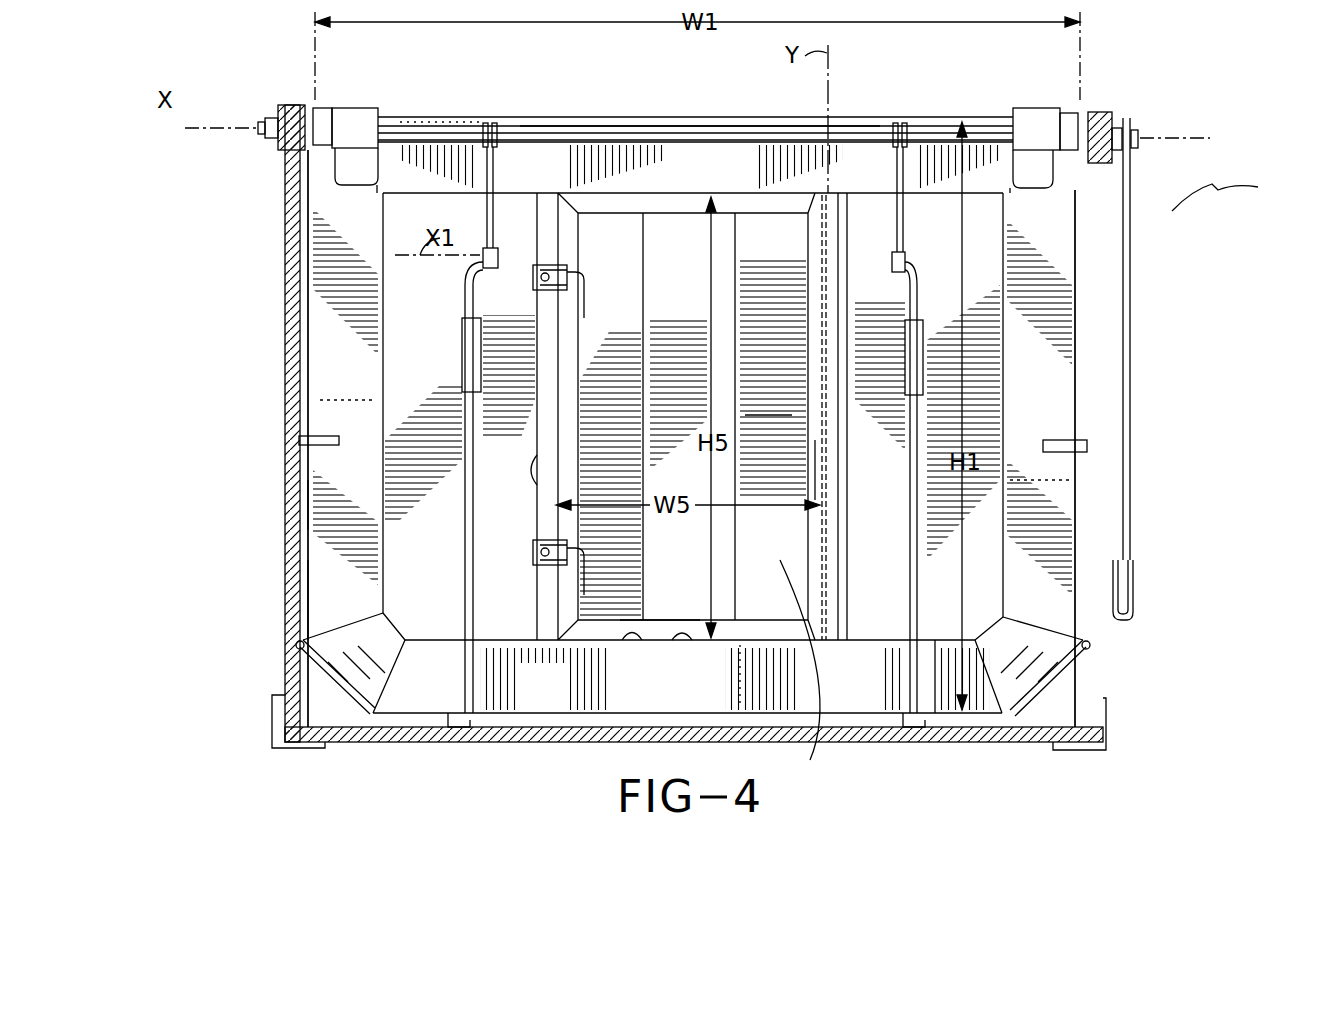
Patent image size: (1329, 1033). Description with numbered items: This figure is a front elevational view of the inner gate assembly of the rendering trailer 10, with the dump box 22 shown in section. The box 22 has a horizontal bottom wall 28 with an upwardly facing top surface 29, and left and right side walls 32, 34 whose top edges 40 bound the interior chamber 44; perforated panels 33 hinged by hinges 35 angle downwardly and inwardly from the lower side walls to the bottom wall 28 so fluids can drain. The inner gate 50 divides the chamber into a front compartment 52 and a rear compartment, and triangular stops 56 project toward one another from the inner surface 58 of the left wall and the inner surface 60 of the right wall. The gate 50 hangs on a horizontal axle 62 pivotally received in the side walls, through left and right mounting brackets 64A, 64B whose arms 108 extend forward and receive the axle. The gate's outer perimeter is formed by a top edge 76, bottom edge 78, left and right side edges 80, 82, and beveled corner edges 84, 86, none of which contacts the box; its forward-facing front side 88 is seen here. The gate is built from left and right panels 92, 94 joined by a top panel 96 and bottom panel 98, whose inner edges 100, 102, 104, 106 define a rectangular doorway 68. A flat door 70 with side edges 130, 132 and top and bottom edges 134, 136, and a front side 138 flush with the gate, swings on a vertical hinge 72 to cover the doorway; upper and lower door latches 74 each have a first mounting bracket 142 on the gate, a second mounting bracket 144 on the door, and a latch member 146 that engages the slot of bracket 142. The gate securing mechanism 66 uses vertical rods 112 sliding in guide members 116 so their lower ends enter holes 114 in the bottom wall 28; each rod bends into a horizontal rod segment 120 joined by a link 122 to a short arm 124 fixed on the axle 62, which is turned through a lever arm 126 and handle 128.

The rendering trailer 10 is at (1229, 197).
The dump box 22 is at (278, 273).
The bottom wall 28 is at (512, 745).
The top surface 29 is at (768, 722).
The left side wall 32 is at (1110, 642).
The perforated panels 33 is at (330, 712).
The right side wall 34 is at (278, 215).
The hinges 35 is at (345, 630).
The top edge 40 is at (290, 103).
The interior chamber 44 is at (362, 478).
The inner gate 50 is at (578, 108).
The front compartment 52 is at (345, 394).
The triangular stops 56 is at (322, 445).
The inner surface 58 is at (1078, 488).
The inner surface 60 is at (300, 372).
The axle 62 is at (625, 130).
The left mounting bracket 64A is at (1028, 100).
The right mounting bracket 64B is at (362, 100).
The gate securing mechanism 66 is at (450, 690).
The rectangular doorway 68 is at (685, 642).
The door 70 is at (796, 674).
The vertical hinge 72 is at (822, 470).
The door latches 74 is at (598, 278).
The top edge 76 is at (530, 116).
The bottom edge 78 is at (935, 718).
The left side edge 80 is at (1076, 270).
The right side edge 82 is at (306, 331).
The left beveled corner edge 84 is at (1100, 730).
The right beveled corner edge 86 is at (297, 738).
The front side 88 is at (330, 566).
The left panel 92 is at (1048, 393).
The right panel 94 is at (378, 604).
The top panel 96 is at (683, 160).
The bottom panel 98 is at (585, 716).
The inner vertical edge 100 is at (822, 318).
The inner vertical edge 102 is at (560, 362).
The bottom edge 104 is at (700, 213).
The bottom edge 106 is at (625, 615).
The arm 108 is at (325, 106).
The vertical rod 112 is at (464, 545).
The holes 114 is at (460, 725).
The guide members 116 is at (464, 352).
The horizontal rod segment 120 is at (483, 262).
The link 122 is at (488, 218).
The short arm 124 is at (489, 121).
The lever arm 126 is at (1131, 346).
The handle 128 is at (1136, 594).
The left side edge 130 is at (832, 512).
The right side edge 132 is at (540, 457).
The top edge 134 is at (735, 193).
The bottom edge 136 is at (632, 642).
The front side 138 is at (768, 403).
The first mounting bracket 142 is at (535, 288).
The second mounting bracket 144 is at (570, 268).
The latch member 146 is at (586, 300).